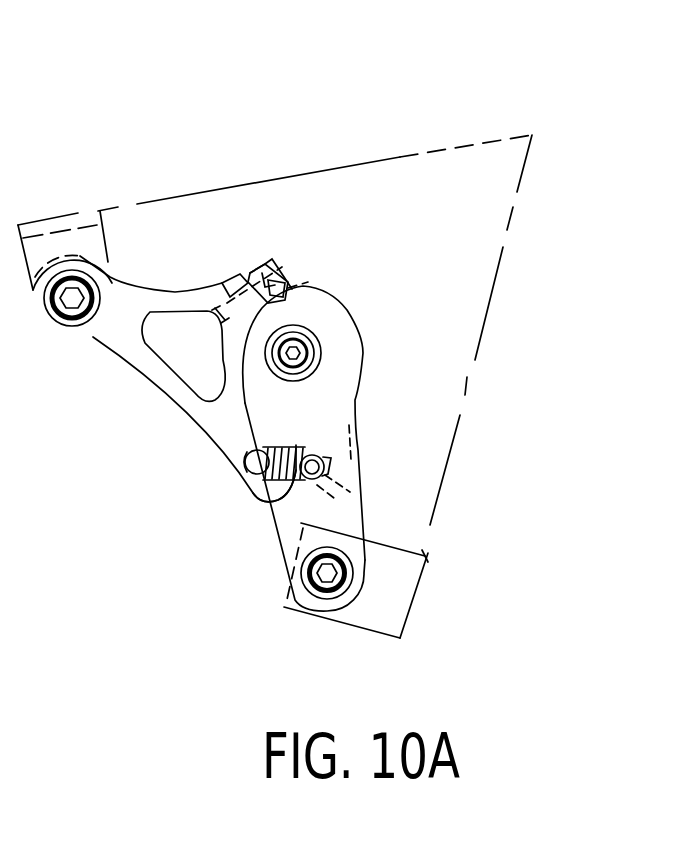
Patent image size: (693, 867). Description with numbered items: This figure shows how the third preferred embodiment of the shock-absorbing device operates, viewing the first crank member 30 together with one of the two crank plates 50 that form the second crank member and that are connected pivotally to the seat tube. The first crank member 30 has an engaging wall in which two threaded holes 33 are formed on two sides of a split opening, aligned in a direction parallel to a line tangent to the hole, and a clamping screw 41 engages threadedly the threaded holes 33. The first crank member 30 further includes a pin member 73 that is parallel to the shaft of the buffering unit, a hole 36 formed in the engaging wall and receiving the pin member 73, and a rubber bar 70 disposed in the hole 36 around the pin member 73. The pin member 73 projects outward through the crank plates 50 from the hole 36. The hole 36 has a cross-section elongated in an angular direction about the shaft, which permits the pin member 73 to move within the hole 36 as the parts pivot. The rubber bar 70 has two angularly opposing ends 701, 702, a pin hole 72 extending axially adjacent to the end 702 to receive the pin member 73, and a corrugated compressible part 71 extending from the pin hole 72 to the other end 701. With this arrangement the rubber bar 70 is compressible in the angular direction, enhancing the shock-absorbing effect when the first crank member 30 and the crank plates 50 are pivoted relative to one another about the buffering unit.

The first crank member 30 is at (163, 274).
The threaded holes 33 is at (223, 283).
The hole 36 is at (252, 498).
The clamping screw 41 is at (274, 262).
The crank plates 50 is at (372, 457).
The rubber bar 70 is at (293, 447).
The angularly opposing end 701 is at (246, 462).
The angularly opposing end 702 is at (325, 464).
The corrugated compressible part 71 is at (300, 487).
The pin hole 72 is at (322, 456).
The pin member 73 is at (278, 507).